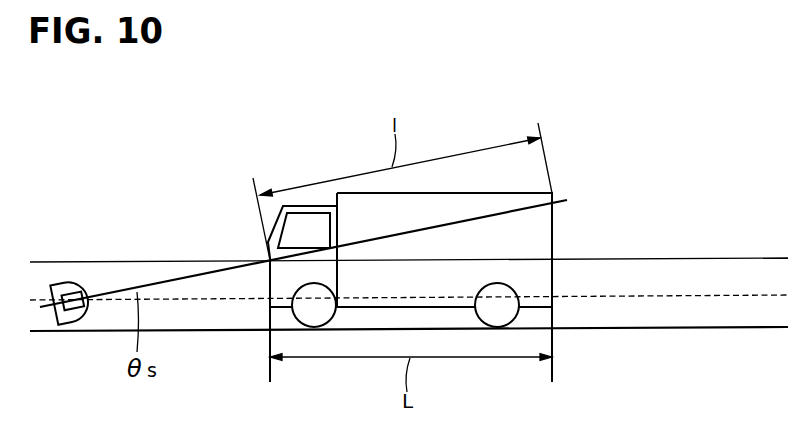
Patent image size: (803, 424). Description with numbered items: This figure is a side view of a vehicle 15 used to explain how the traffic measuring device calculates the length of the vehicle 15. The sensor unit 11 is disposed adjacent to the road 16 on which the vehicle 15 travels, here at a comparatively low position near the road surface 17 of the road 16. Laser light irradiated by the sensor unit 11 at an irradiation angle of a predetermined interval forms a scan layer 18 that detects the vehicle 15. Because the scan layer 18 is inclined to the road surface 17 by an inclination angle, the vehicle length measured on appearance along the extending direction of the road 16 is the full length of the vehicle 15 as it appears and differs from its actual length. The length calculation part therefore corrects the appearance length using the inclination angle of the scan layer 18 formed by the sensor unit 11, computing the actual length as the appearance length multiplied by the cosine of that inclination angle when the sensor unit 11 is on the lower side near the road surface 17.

The sensor unit 11 is at (58, 283).
The vehicle 15 is at (540, 235).
The road 16 is at (620, 328).
The road surface 17 is at (705, 325).
The scan layer 18 is at (192, 277).